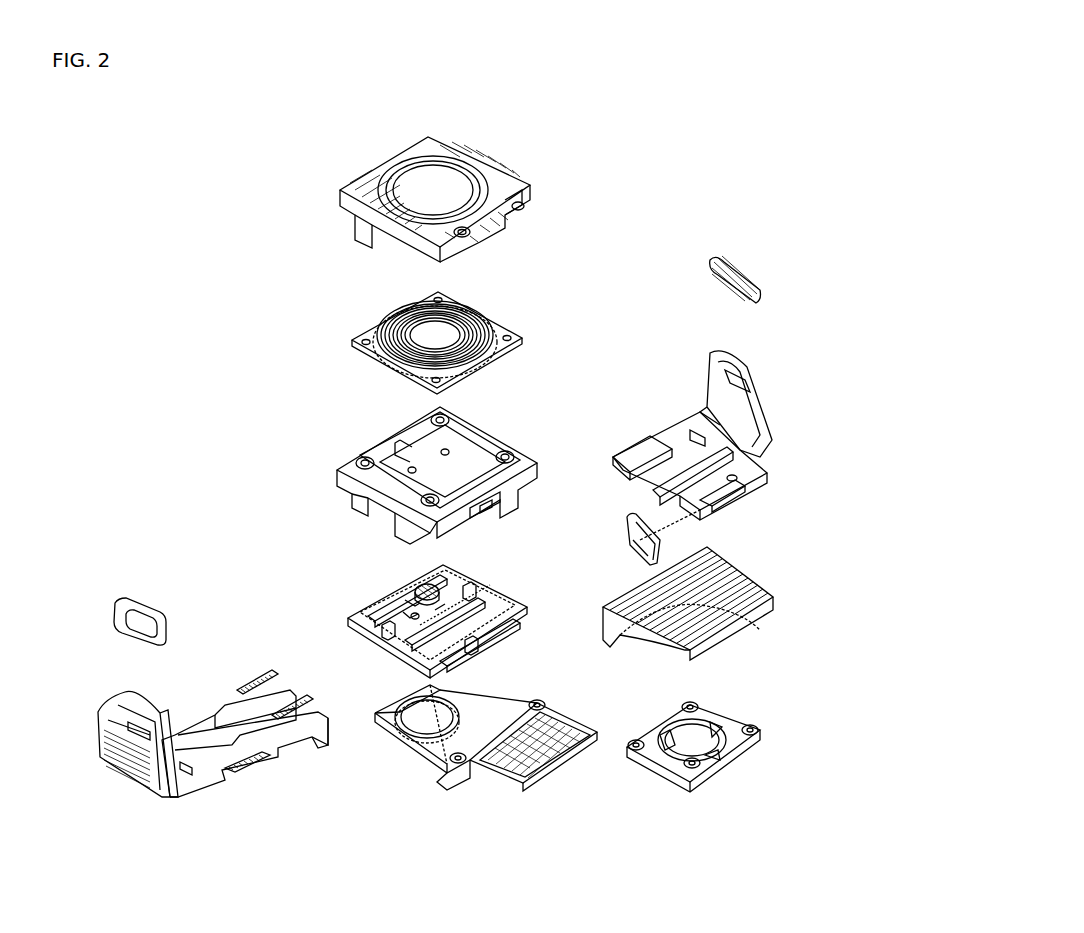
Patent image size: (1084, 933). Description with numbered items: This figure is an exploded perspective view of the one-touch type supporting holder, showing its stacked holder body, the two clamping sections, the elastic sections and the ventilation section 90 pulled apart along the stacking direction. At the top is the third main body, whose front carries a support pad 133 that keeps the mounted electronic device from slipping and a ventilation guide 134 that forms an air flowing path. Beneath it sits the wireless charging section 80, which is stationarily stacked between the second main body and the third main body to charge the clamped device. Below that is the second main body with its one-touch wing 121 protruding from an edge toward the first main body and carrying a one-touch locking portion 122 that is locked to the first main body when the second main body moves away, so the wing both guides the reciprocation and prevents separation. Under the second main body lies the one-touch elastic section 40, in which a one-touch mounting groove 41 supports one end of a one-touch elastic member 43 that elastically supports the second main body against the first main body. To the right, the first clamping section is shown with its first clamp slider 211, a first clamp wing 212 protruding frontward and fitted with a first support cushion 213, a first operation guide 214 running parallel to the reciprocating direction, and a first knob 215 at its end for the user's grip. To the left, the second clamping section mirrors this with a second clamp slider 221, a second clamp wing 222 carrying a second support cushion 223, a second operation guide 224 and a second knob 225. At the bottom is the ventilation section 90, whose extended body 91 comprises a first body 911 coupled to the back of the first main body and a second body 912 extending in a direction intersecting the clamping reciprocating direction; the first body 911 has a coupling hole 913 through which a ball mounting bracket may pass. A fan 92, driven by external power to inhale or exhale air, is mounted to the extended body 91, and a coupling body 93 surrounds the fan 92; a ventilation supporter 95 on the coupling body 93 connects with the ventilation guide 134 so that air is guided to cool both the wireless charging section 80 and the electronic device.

The ventilation guide 134 is at (422, 142).
The support pad 133 is at (456, 180).
The wireless charging section 80 is at (356, 325).
The one-touch locking portion 122 is at (519, 492).
The one-touch wing 121 is at (478, 514).
The one-touch elastic section 40 is at (425, 603).
The one-touch mounting groove 41 is at (410, 600).
The one-touch elastic member 43 is at (425, 578).
The second clamp wing 222 is at (122, 704).
The second clamp slider 221 is at (198, 706).
The second support cushion 223 is at (118, 604).
The second operation guide 224 is at (275, 772).
The second knob 225 is at (320, 748).
The extended body 91 is at (484, 763).
The first body 911 is at (422, 763).
The second body 912 is at (465, 778).
The coupling hole 913 is at (398, 738).
The ventilation section 90 is at (604, 808).
The first clamp slider 211 is at (700, 412).
The first clamp wing 212 is at (728, 356).
The first support cushion 213 is at (706, 268).
The first operation guide 214 is at (713, 503).
The first knob 215 is at (640, 522).
The coupling body 93 is at (689, 598).
The ventilation supporter 95 is at (757, 590).
The fan 92 is at (710, 782).